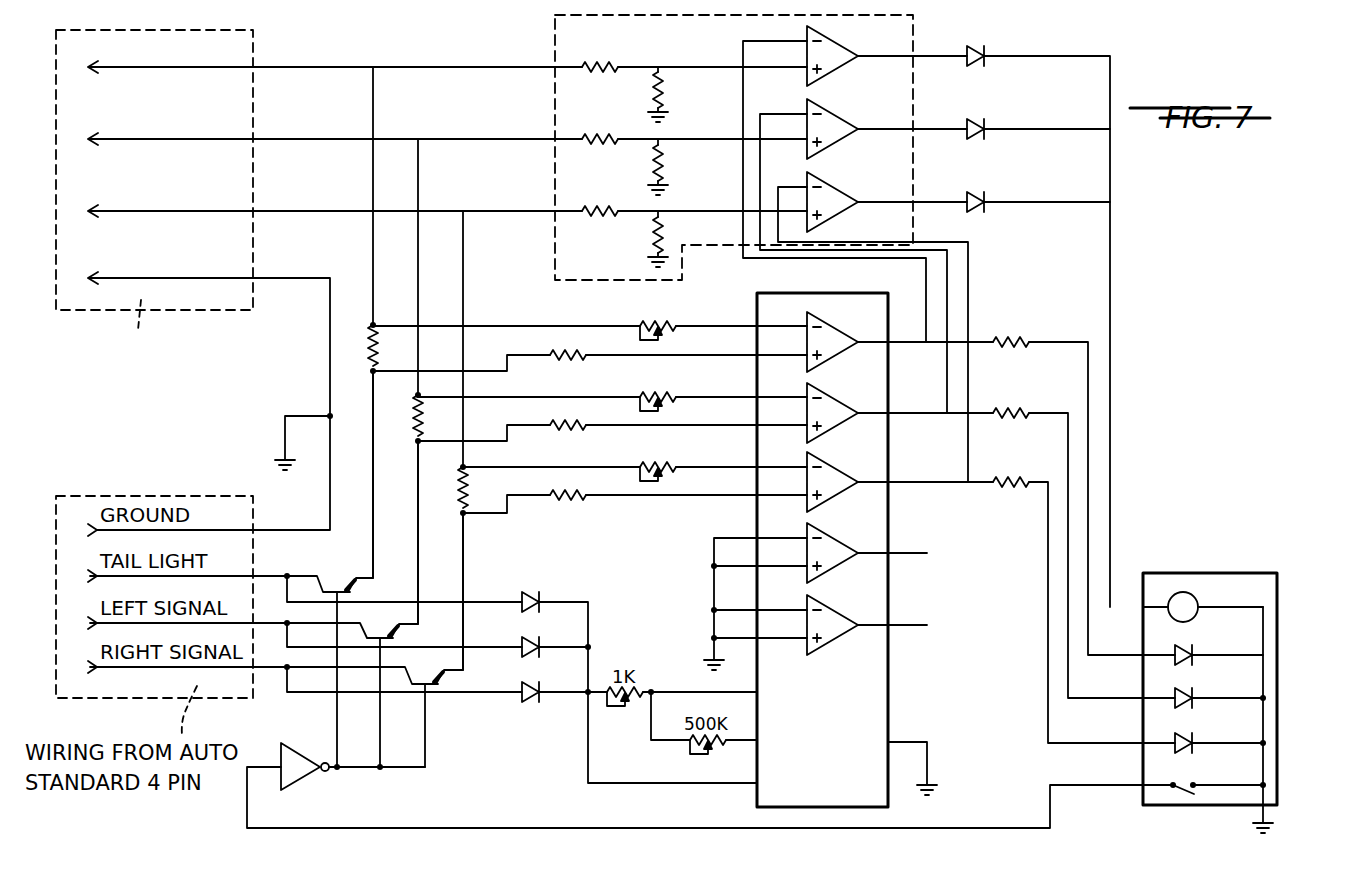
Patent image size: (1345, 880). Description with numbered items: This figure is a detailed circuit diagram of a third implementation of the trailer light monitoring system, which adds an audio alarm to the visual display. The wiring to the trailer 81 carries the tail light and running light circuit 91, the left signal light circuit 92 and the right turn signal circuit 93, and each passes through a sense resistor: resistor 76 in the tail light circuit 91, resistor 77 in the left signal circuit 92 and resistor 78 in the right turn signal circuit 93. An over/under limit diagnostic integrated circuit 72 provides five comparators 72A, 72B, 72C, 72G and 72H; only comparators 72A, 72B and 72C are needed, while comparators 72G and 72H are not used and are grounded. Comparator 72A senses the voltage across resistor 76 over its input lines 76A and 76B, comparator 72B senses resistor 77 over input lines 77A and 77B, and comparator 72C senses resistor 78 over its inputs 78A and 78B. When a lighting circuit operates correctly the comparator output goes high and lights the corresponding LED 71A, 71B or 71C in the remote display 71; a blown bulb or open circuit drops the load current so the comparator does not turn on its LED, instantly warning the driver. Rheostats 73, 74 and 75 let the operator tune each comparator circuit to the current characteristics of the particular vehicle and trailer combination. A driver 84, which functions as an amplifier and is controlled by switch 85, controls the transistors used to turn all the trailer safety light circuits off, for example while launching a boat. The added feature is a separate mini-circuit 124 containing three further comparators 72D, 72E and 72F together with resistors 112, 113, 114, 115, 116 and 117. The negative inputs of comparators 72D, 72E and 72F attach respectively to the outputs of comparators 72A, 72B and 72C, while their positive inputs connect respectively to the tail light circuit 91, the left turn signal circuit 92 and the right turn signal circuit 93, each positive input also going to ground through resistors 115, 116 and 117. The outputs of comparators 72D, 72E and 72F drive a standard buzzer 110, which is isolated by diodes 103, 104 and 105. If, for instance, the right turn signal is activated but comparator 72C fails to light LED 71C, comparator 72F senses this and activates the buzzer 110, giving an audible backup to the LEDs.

The remote display 71 is at (1277, 650).
The LED 71A is at (1175, 661).
The LED 71B is at (1175, 704).
The LED 71C is at (1175, 749).
The over/under limit diagnostic circuit 72 is at (770, 310).
The comparator 72A is at (838, 345).
The comparator 72B is at (838, 415).
The comparator 72C is at (838, 485).
The comparator 72D is at (852, 56).
The comparator 72E is at (852, 129).
The comparator 72F is at (852, 202).
The comparator 72G is at (838, 555).
The comparator 72H is at (838, 618).
The rheostat 73 is at (645, 326).
The rheostat 74 is at (645, 397).
The rheostat 75 is at (645, 467).
The resistor 76 is at (372, 340).
The sense line 76A is at (538, 325).
The sense line 76B is at (523, 355).
The resistor 77 is at (417, 413).
The input line 77A is at (515, 397).
The input line 77B is at (523, 425).
The resistor 78 is at (462, 507).
The input 78A is at (515, 467).
The input 78B is at (522, 497).
The wiring to trailer connector 81 is at (66, 184).
The driver 84 is at (290, 775).
The switch 85 is at (1185, 796).
The tail light circuit 91 is at (322, 60).
The left signal light circuit 92 is at (302, 136).
The right turn signal circuit 93 is at (278, 210).
The diode 103 is at (975, 52).
The diode 104 is at (975, 125).
The diode 105 is at (975, 198).
The buzzer 110 is at (1175, 614).
The resistor 112 is at (580, 72).
The resistor 113 is at (580, 144).
The resistor 114 is at (580, 216).
The resistor 115 is at (663, 93).
The resistor 116 is at (663, 165).
The resistor 117 is at (663, 236).
The mini-circuit 124 is at (553, 45).